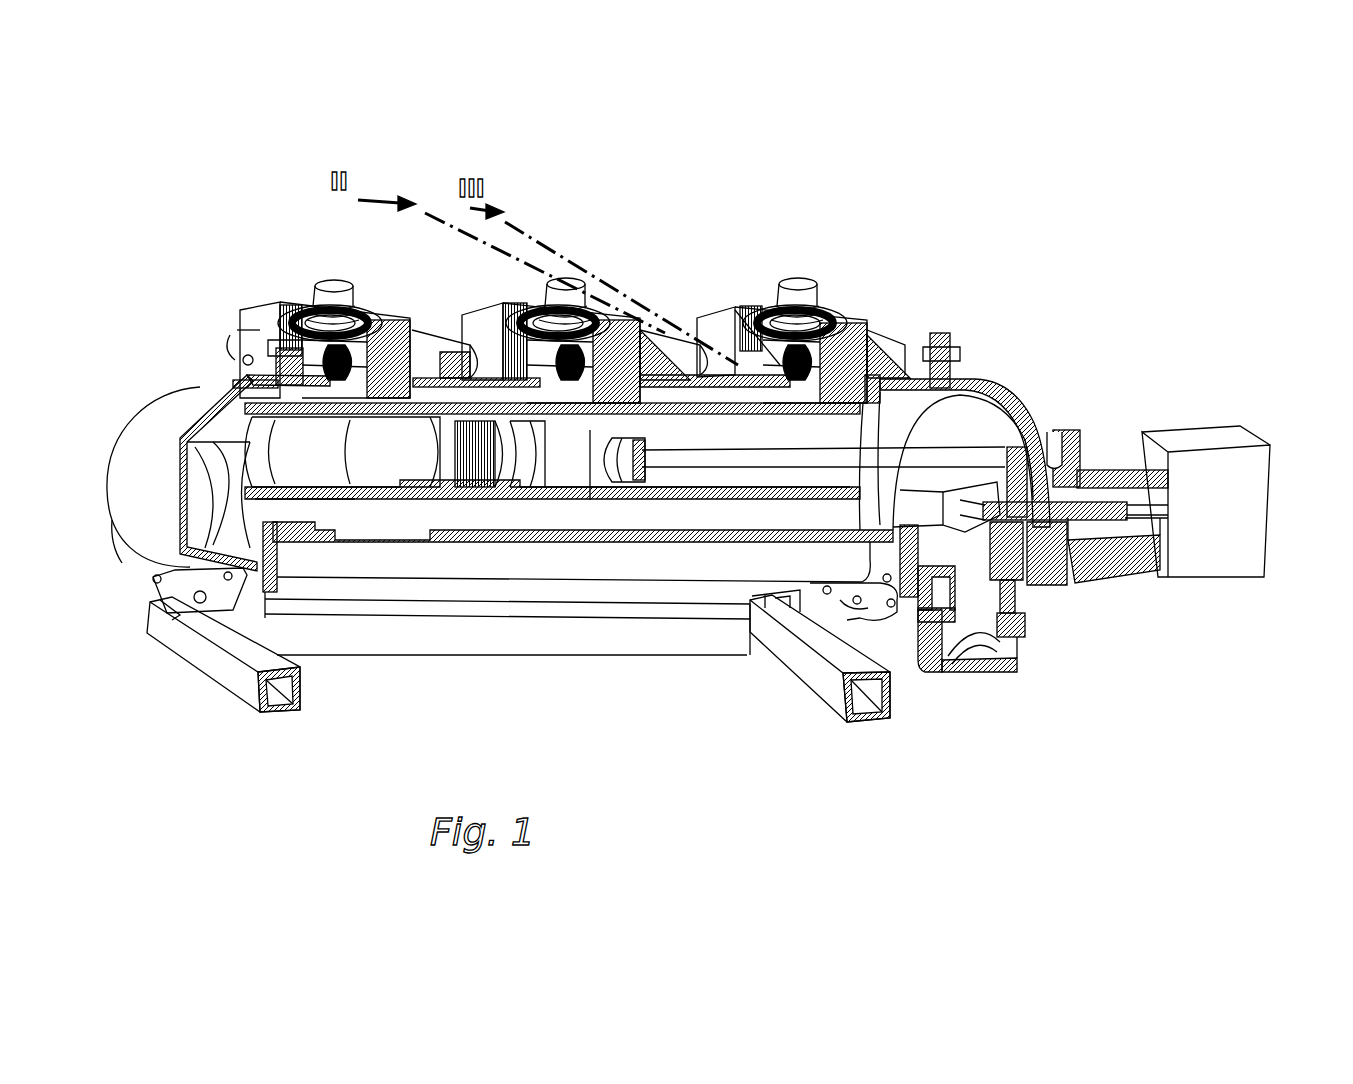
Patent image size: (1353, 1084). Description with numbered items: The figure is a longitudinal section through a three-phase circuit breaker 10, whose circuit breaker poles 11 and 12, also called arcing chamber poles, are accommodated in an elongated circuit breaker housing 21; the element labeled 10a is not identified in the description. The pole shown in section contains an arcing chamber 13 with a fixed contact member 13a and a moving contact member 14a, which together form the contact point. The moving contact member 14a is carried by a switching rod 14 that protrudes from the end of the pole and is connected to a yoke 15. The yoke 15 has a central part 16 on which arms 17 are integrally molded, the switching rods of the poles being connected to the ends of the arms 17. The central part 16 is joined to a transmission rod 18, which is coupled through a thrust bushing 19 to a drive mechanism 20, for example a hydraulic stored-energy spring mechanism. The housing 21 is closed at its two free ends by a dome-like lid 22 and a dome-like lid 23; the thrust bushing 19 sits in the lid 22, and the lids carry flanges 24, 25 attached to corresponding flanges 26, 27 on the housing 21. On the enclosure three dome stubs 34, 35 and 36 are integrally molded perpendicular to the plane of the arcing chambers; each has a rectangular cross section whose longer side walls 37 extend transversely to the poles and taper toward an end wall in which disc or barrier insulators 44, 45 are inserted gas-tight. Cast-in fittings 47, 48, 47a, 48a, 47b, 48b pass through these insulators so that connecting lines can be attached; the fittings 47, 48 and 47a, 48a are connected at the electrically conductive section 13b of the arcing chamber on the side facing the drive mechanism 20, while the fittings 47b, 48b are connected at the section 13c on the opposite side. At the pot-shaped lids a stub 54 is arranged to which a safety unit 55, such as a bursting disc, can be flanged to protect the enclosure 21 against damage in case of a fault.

The circuit breaker 10 is at (740, 806).
The foot 10a is at (822, 690).
The circuit breaker pole 11 is at (290, 420).
The circuit breaker pole 12 is at (212, 448).
The arcing chamber 13 is at (420, 490).
The fixed contact member 13a is at (487, 490).
The electrically conductive section 13b is at (772, 505).
The section 13c is at (358, 505).
The switching rod 14 is at (760, 458).
The moving contact member 14a is at (626, 478).
The yoke 15 is at (1045, 577).
The central part 16 is at (940, 650).
The arms 17 is at (975, 525).
The transmission rod 18 is at (1100, 517).
The thrust bushing 19 is at (1082, 452).
The drive mechanism 20 is at (1247, 497).
The circuit breaker housing 21 is at (598, 520).
The dome-like lid 22 is at (990, 392).
The dome-like lid 23 is at (117, 522).
The flange 24 is at (952, 338).
The flange 25 is at (265, 316).
The flange 26 is at (937, 333).
The flange 27 is at (293, 310).
The dome stub 34 is at (230, 332).
The dome stub 35 is at (482, 350).
The dome stub 36 is at (692, 325).
The side walls 37 is at (487, 348).
The disc or barrier insulator 44 is at (742, 330).
The disc or barrier insulator 45 is at (850, 292).
The fitting 47 is at (800, 310).
The fitting 47a is at (569, 290).
The fitting 47b is at (330, 284).
The fitting 48 is at (882, 305).
The fitting 48a is at (612, 320).
The fitting 48b is at (345, 265).
The stub 54 is at (990, 600).
The safety unit 55 is at (1018, 672).